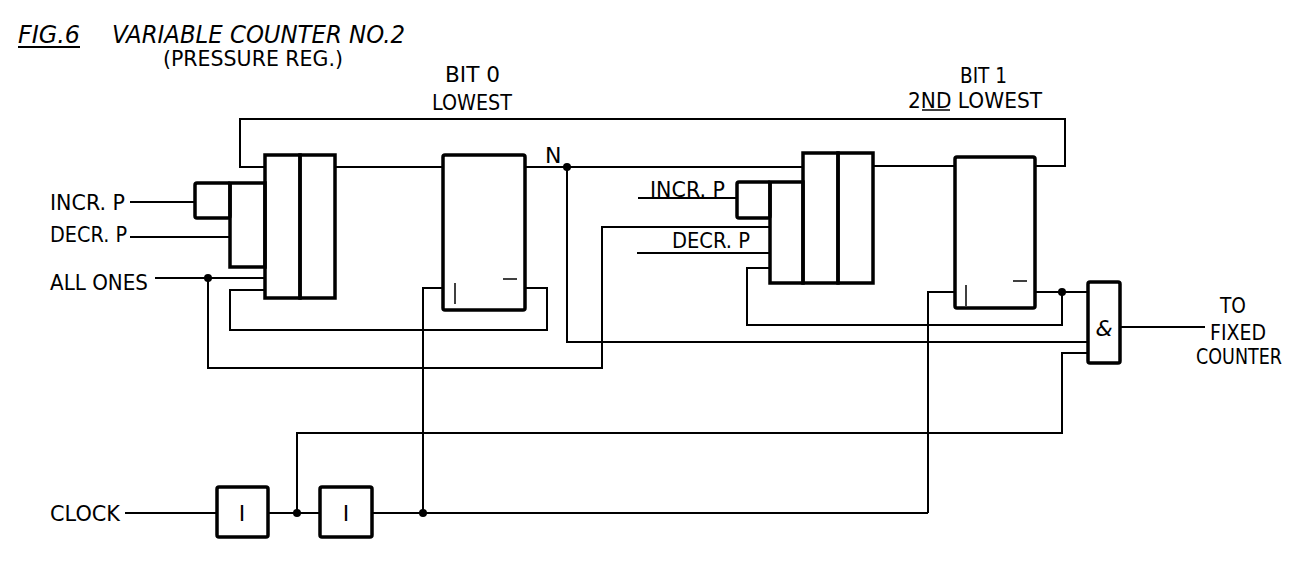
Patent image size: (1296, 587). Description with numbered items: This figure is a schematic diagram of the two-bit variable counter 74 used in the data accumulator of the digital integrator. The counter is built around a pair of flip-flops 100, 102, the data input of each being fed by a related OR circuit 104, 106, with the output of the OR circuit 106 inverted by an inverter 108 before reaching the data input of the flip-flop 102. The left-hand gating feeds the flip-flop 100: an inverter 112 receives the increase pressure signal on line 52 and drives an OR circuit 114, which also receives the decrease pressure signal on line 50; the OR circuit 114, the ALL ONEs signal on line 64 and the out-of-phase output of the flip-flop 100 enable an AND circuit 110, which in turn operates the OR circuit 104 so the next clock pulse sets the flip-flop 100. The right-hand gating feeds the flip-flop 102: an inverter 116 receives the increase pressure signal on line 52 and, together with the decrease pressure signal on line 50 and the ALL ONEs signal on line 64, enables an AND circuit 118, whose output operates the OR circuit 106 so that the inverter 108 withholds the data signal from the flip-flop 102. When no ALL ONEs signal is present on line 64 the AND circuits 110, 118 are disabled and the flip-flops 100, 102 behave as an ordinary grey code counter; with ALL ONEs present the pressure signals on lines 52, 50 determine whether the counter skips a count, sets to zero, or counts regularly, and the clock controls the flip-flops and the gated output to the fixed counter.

The 2-bit variable counter 74 is at (545, 80).
The flip-flop 100 is at (493, 143).
The flip-flop 102 is at (1008, 140).
The OR circuit 104 is at (338, 142).
The OR circuit 106 is at (818, 140).
The inverter 108 is at (844, 160).
The AND circuit 110 is at (290, 141).
The inverter 112 is at (200, 182).
The OR circuit 114 is at (242, 186).
The inverter 116 is at (750, 182).
The AND circuit 118 is at (784, 283).
The increase pressure signal line 52 is at (147, 200).
The decrease pressure signal line 50 is at (158, 236).
The ALL ONEs line 64 is at (185, 278).